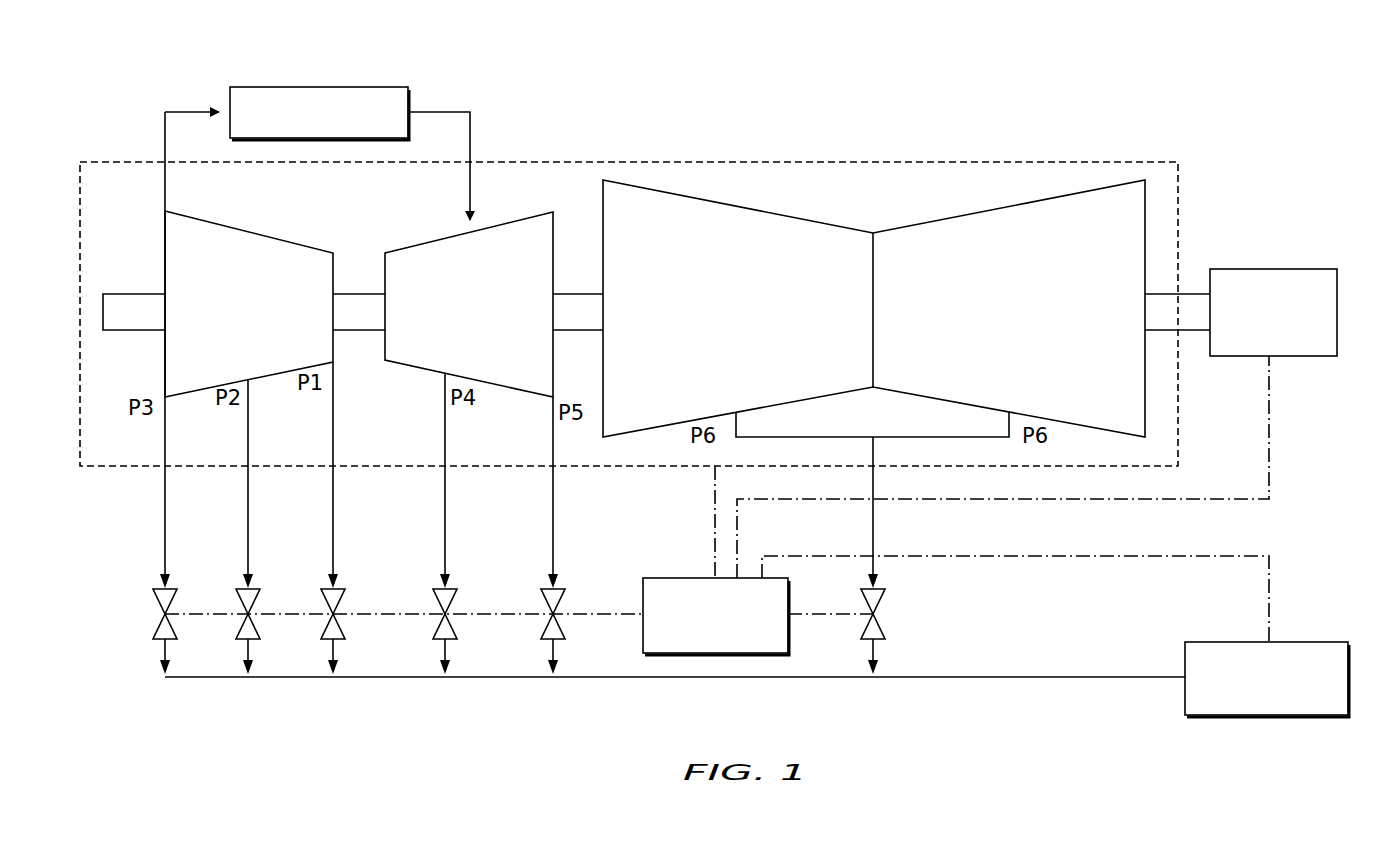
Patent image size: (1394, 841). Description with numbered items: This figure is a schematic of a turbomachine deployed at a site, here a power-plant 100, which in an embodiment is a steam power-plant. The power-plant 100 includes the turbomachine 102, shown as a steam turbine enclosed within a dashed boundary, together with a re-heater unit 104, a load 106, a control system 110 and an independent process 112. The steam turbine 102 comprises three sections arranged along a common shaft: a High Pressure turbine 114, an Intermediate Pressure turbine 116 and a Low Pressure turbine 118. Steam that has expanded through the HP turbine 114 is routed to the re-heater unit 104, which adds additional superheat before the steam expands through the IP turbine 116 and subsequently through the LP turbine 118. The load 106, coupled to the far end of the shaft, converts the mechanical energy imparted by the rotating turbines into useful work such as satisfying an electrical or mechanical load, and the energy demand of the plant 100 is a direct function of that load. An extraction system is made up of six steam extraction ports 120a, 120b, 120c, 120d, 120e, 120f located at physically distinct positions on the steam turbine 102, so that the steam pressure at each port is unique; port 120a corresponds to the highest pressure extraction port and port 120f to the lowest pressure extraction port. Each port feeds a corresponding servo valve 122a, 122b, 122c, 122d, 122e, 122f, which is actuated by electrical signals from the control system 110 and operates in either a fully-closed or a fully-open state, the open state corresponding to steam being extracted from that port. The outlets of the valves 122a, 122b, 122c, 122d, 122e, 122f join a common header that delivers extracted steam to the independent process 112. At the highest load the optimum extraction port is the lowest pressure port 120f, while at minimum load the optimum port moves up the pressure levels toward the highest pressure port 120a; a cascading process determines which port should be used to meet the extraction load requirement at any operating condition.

The power-plant 100 is at (880, 92).
The turbomachine 102 is at (733, 161).
The re-heater unit 104 is at (357, 87).
The load 106 is at (1262, 269).
The control system 110 is at (690, 578).
The independent process 112 is at (1310, 642).
The High Pressure turbine 114 is at (262, 236).
The Intermediate Pressure turbine 116 is at (438, 239).
The Low Pressure turbine 118 is at (796, 218).
The steam extraction port 120a is at (333, 362).
The steam extraction port 120b is at (165, 397).
The steam extraction port 120c is at (248, 380).
The steam extraction port 120d is at (445, 375).
The steam extraction port 120e is at (553, 397).
The steam extraction port 120f is at (736, 413).
The servo valve 122a is at (338, 587).
The servo valve 122b is at (252, 587).
The servo valve 122c is at (169, 587).
The servo valve 122d is at (450, 588).
The servo valve 122e is at (558, 588).
The servo valve 122f is at (877, 590).